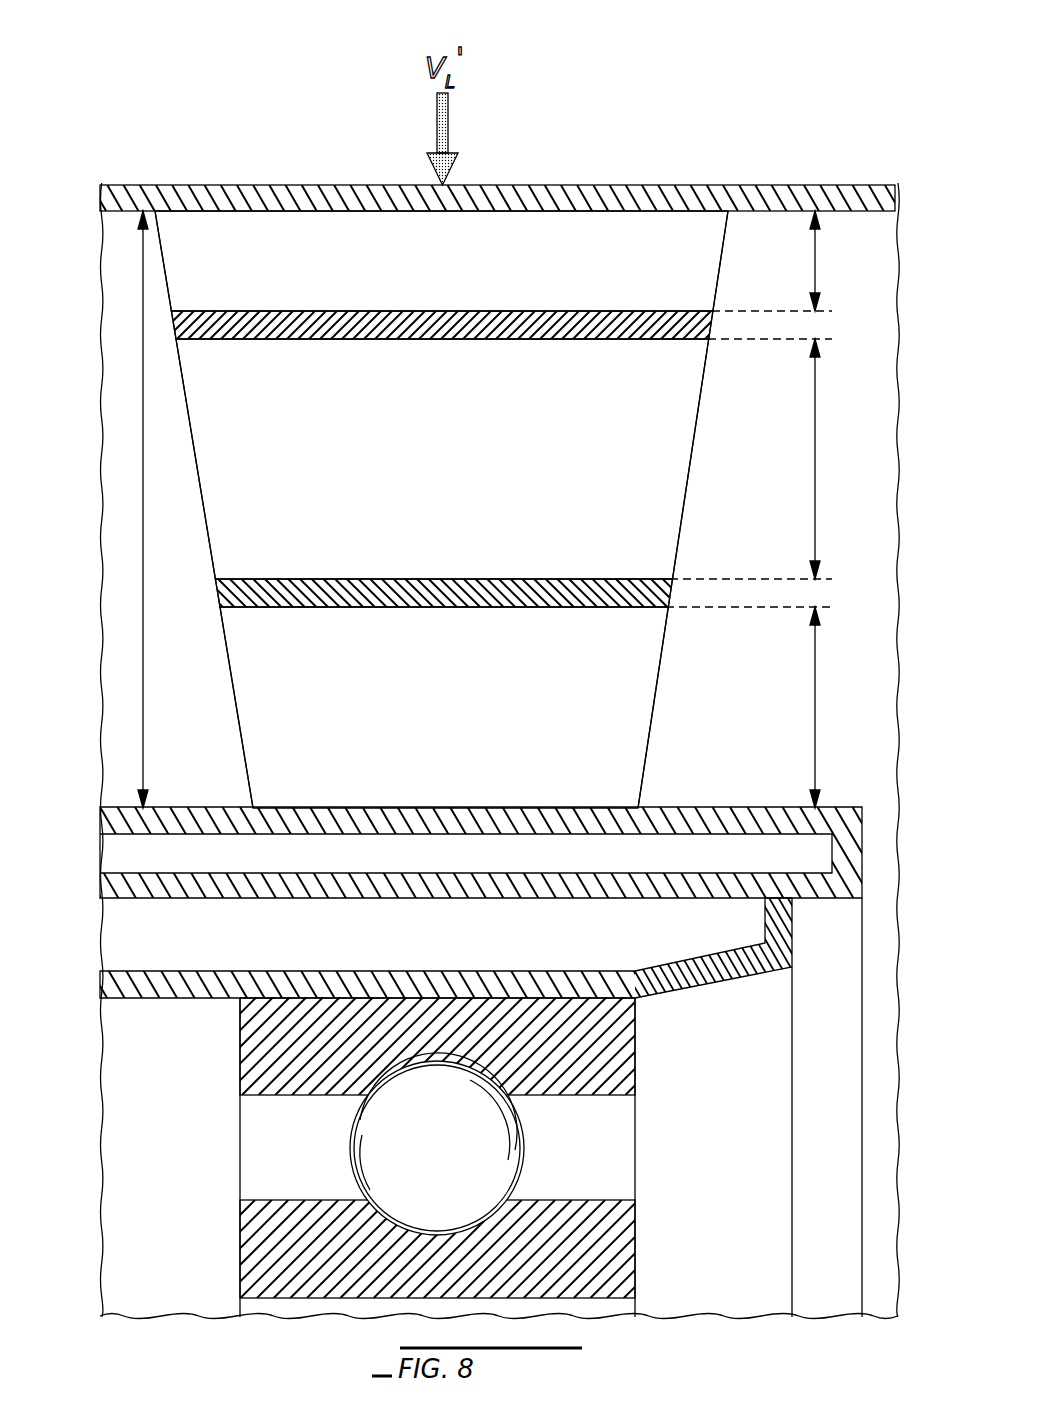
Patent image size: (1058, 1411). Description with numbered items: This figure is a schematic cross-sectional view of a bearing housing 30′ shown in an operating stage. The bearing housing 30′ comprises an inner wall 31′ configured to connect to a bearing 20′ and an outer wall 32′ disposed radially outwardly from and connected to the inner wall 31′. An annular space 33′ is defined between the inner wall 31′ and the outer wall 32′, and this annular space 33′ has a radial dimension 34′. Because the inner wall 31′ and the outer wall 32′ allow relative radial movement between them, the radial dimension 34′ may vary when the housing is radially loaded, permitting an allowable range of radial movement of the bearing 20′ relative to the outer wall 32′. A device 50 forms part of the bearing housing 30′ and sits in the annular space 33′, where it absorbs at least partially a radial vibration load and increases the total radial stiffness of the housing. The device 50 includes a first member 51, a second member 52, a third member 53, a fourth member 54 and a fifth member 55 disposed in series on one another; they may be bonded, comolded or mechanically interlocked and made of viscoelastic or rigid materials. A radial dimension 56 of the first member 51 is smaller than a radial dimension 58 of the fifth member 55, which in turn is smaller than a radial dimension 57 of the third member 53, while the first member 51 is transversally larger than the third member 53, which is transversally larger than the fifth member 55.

The bearing housing 30′ is at (208, 140).
The outer wall 32′ is at (706, 200).
The annular space 33′ is at (120, 235).
The radial dimension 34′ is at (142, 513).
The inner wall 31′ is at (724, 818).
The bearing 20′ is at (700, 1162).
The device 50 is at (554, 509).
The first member 51 is at (698, 262).
The second member 52 is at (690, 330).
The third member 53 is at (670, 460).
The fourth member 54 is at (660, 595).
The fifth member 55 is at (640, 707).
The radial dimension 56 is at (820, 262).
The radial dimension 57 is at (820, 460).
The radial dimension 58 is at (820, 707).